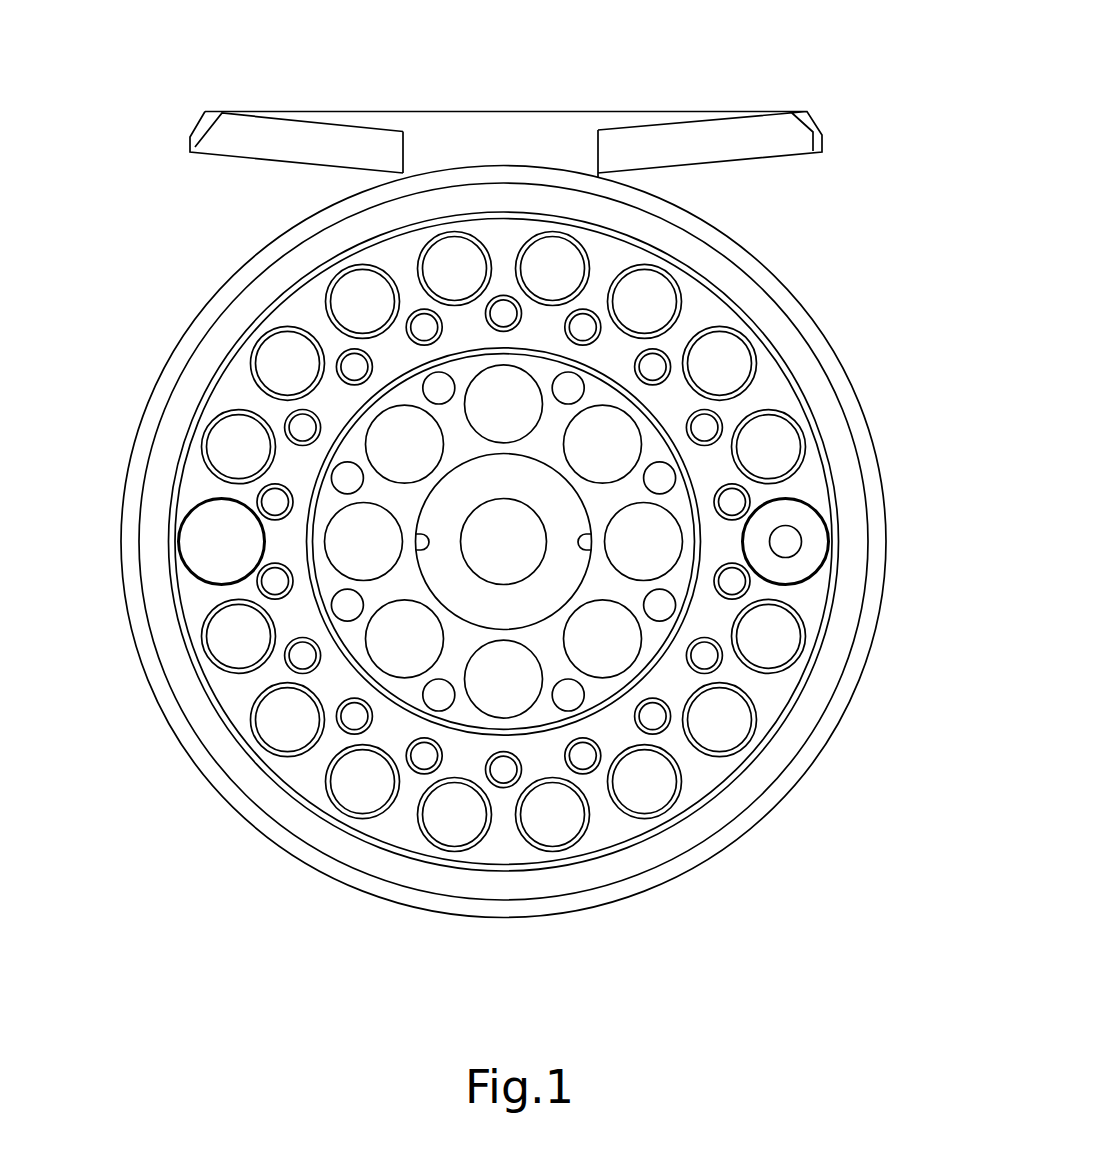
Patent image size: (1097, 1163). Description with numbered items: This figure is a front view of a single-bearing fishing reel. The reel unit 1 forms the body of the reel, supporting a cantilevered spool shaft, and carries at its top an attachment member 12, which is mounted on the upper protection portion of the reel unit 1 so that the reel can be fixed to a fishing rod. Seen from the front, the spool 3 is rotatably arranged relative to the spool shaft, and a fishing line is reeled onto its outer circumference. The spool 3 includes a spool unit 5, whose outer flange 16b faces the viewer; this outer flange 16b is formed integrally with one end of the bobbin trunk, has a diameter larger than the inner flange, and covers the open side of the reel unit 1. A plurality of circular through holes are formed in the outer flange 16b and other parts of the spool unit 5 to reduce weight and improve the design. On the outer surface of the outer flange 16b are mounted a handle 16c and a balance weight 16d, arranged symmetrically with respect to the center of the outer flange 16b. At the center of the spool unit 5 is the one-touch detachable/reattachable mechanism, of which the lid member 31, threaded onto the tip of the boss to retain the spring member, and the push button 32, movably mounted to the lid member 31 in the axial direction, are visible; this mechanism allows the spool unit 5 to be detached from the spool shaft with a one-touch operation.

The reel unit 1 is at (509, 503).
The attachment member 12 is at (810, 112).
The spool 3 is at (790, 283).
The spool unit 5 is at (824, 329).
The outer flange 16b is at (823, 402).
The handle 16c is at (812, 518).
The balance weight 16d is at (190, 553).
The lid member 31 is at (463, 596).
The push button 32 is at (510, 566).